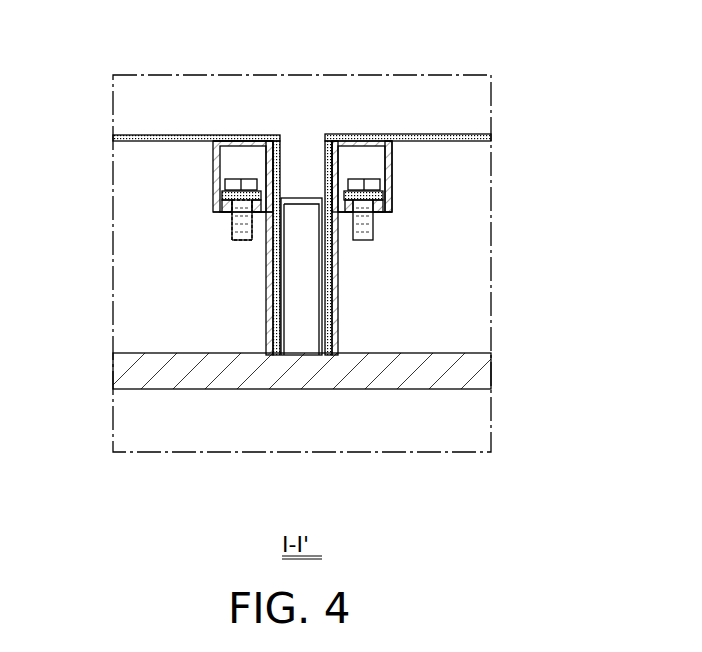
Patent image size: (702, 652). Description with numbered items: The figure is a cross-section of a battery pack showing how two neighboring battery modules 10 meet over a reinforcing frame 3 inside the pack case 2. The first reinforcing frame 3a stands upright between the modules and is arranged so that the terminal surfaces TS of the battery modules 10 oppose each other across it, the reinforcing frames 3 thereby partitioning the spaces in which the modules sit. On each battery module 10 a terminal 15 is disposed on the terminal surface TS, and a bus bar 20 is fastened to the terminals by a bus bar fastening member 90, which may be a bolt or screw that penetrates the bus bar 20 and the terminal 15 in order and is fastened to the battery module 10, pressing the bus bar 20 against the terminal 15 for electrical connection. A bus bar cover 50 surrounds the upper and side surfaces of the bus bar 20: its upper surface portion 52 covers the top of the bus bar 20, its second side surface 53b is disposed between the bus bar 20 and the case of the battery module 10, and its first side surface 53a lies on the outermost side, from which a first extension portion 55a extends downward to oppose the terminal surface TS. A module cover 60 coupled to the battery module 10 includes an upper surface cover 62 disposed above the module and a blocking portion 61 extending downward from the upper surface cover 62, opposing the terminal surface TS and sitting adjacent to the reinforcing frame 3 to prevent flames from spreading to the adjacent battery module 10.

The pack case 2 is at (118, 370).
The first reinforcing frame 3a is at (298, 355).
The reinforcing frame 3 is at (287, 293).
The battery module 10 is at (133, 262).
The terminal 15 is at (214, 208).
The bus bar 20 is at (216, 196).
The bus bar cover 50 is at (213, 156).
The upper surface portion 52 is at (243, 145).
The first side surface 53a is at (346, 160).
The second side surface 53b is at (376, 160).
The first extension portion 55a is at (337, 265).
The module cover 60 is at (160, 135).
The blocking portion 61 is at (337, 322).
The upper surface cover 62 is at (447, 134).
The bus bar fastening member 90 is at (229, 184).
The terminal surface TS is at (273, 320).